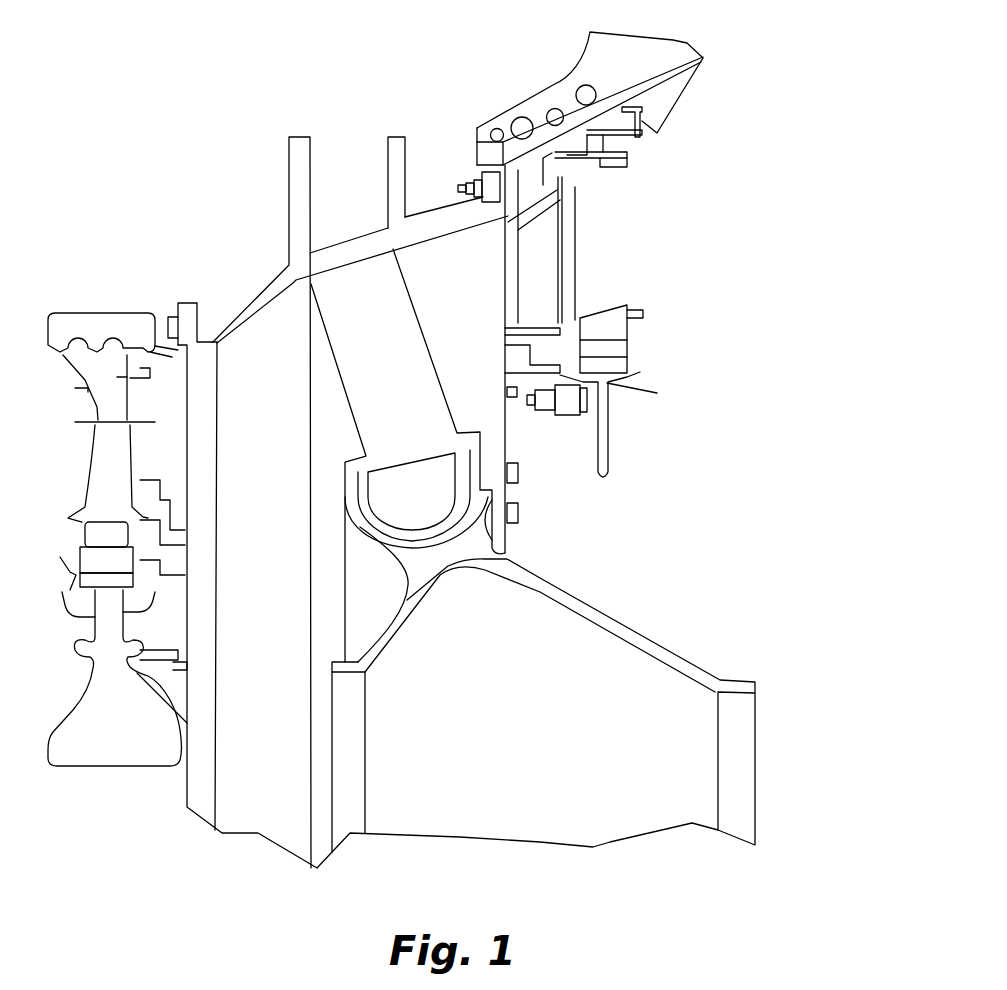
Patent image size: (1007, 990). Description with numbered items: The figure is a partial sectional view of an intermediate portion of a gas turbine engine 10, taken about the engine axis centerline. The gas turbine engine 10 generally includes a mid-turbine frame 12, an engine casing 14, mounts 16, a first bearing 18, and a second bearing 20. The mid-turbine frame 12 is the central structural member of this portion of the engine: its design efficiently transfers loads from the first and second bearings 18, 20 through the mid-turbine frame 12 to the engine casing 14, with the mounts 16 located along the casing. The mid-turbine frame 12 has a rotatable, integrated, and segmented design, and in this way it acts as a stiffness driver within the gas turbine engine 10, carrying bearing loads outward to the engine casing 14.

The gas turbine engine 10 is at (208, 172).
The mid-turbine frame 12 is at (467, 404).
The engine casing 14 is at (247, 302).
The mounts 16 is at (404, 136).
The first bearing 18 is at (340, 673).
The second bearing 20 is at (740, 688).